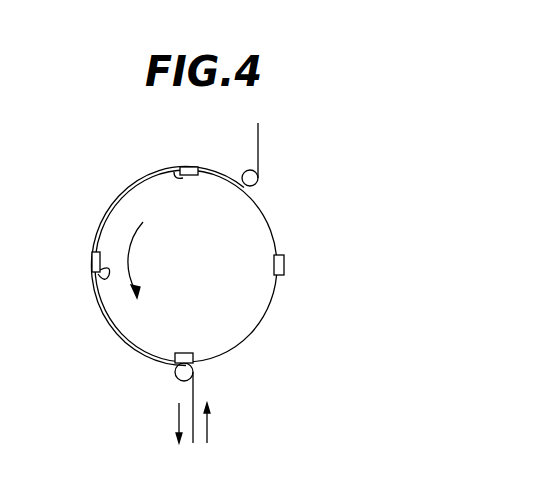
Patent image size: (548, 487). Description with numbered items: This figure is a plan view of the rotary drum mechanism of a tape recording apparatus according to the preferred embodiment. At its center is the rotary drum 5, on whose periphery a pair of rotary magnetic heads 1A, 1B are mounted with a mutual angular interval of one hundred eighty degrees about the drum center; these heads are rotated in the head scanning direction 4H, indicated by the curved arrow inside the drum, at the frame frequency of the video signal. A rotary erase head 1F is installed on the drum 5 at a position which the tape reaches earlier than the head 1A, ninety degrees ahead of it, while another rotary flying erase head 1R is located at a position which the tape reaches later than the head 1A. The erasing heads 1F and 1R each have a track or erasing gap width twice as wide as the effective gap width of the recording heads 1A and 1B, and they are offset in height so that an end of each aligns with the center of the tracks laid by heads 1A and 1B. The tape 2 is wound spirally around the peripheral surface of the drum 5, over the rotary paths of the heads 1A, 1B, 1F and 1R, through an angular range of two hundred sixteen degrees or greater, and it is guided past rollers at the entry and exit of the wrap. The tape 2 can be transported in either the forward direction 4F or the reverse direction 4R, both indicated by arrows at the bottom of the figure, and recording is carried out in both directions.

The rotary magnetic head 1A is at (178, 166).
The rotary magnetic head 1B is at (196, 360).
The rotary erase head 1F is at (96, 273).
The rotary flying erase head 1R is at (285, 263).
The tape 2 is at (123, 343).
The rotary drum 5 is at (264, 318).
The head scanning direction 4H is at (130, 255).
The forward direction 4F is at (178, 423).
The reverse direction 4R is at (208, 421).